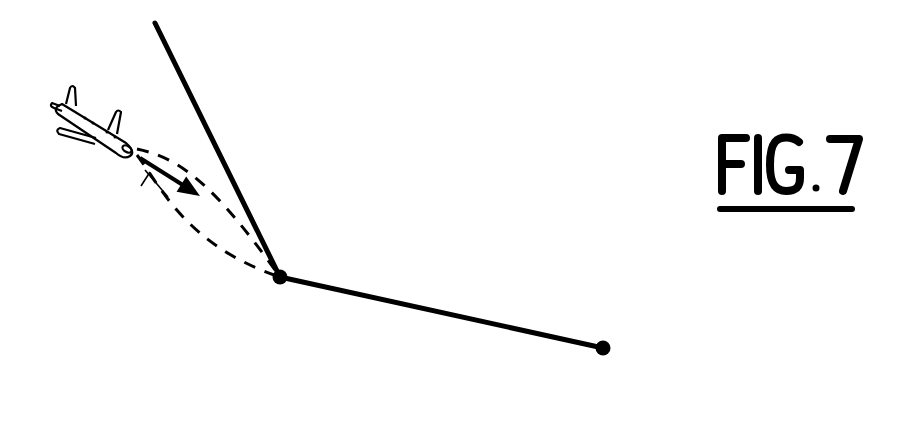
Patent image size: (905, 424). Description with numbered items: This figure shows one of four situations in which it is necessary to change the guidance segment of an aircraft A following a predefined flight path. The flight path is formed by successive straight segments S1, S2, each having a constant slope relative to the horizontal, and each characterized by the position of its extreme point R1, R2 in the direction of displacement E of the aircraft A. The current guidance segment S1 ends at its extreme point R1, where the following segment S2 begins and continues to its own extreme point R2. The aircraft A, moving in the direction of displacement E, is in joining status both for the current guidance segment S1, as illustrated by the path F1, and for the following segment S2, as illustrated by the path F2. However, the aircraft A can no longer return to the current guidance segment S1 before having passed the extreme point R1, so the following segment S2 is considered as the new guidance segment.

The current guidance segment S1 is at (190, 88).
The following segment S2 is at (415, 308).
The extreme point of the current guidance segment R1 is at (289, 270).
The extreme point of the following segment R2 is at (611, 353).
The aircraft A is at (100, 152).
The direction of displacement E is at (144, 198).
The path for joining the current guidance segment F1 is at (240, 202).
The path for joining the following segment F2 is at (203, 237).